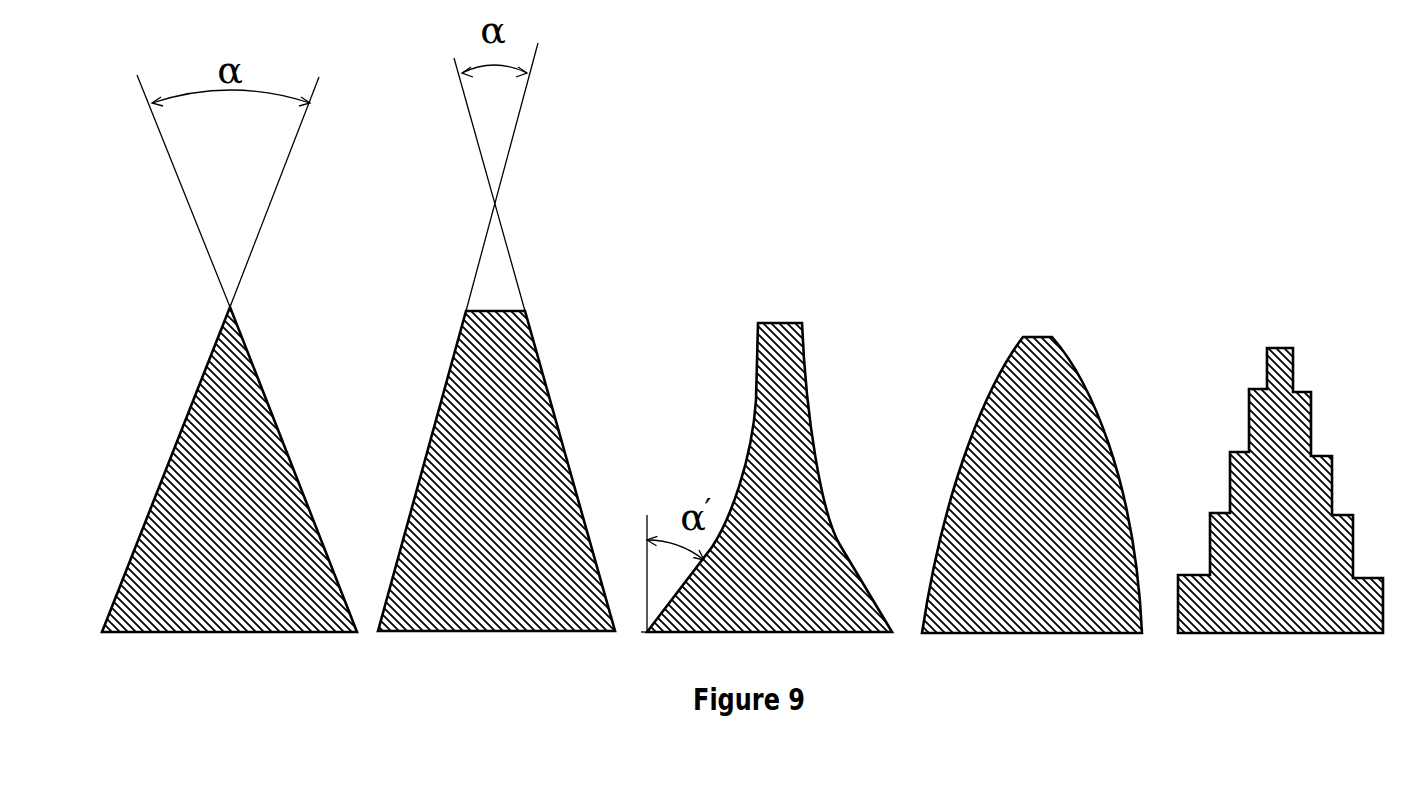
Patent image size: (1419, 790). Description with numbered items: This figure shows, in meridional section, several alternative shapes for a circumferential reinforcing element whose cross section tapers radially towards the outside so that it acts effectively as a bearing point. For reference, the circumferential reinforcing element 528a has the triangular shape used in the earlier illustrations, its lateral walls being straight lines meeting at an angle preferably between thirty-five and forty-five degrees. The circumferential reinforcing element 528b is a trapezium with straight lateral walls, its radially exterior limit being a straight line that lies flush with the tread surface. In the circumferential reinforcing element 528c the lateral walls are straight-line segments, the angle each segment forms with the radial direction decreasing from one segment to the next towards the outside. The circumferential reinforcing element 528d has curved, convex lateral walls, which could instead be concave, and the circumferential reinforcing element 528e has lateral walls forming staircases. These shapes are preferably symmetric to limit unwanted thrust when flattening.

The circumferential reinforcing element 528a is at (272, 520).
The circumferential reinforcing element 528b is at (543, 500).
The circumferential reinforcing element 528c is at (782, 508).
The circumferential reinforcing element 528d is at (1038, 365).
The circumferential reinforcing element 528e is at (1280, 368).